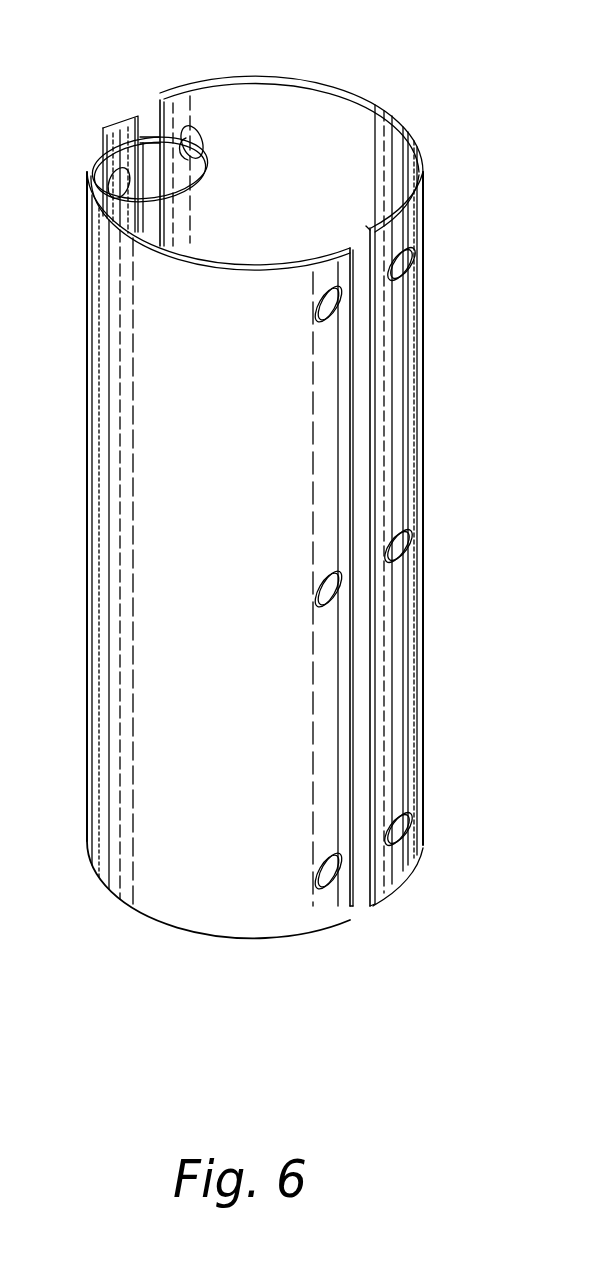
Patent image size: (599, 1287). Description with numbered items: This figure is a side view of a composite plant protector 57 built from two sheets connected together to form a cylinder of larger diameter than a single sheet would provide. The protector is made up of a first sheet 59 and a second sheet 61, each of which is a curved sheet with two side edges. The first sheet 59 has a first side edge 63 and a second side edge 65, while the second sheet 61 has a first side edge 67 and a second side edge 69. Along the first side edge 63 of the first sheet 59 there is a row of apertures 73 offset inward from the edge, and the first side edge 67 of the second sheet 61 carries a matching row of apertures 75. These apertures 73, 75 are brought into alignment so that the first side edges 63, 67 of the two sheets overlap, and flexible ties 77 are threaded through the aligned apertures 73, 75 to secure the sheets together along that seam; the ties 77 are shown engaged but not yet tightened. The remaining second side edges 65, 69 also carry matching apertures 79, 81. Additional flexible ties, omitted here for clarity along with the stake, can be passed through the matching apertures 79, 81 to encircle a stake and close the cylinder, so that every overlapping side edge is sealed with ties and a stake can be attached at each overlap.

The composite plant protector 57 is at (463, 84).
The first sheet 59 is at (101, 147).
The second sheet 61 is at (423, 417).
The first side edge 63 is at (354, 303).
The second side edge 65 is at (352, 907).
The first side edge 67 is at (366, 235).
The second side edge 69 is at (370, 892).
The apertures 73 is at (123, 168).
The apertures 75 is at (193, 123).
The flexible ties 77 is at (153, 200).
The apertures 79 is at (319, 598).
The apertures 81 is at (404, 540).